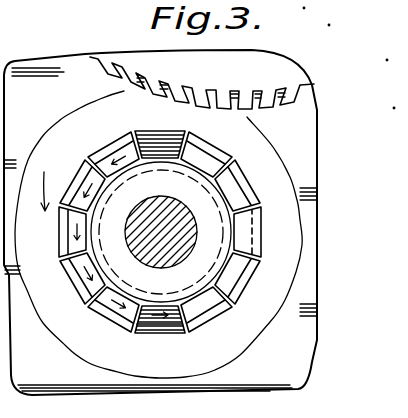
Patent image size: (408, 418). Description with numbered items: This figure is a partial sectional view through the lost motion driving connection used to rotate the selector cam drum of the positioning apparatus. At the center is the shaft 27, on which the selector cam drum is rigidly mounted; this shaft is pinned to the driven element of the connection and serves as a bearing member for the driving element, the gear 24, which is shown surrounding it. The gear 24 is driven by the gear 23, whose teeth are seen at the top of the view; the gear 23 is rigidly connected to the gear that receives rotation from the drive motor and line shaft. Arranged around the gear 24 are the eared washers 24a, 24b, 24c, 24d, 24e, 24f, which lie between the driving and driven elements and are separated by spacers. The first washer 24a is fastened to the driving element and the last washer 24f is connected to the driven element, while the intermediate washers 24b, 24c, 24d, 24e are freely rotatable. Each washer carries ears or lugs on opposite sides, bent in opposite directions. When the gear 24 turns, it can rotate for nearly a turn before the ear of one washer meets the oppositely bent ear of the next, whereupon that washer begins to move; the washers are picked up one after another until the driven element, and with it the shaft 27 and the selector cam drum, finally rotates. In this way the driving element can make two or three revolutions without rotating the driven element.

The gear 23 is at (267, 97).
The gear 24 is at (122, 94).
The eared washer 24a is at (200, 306).
The eared washer 24b is at (236, 276).
The eared washer 24c is at (243, 223).
The eared washer 24d is at (226, 205).
The eared washer 24e is at (204, 160).
The eared washer 24f is at (158, 325).
The shaft 27 is at (150, 252).